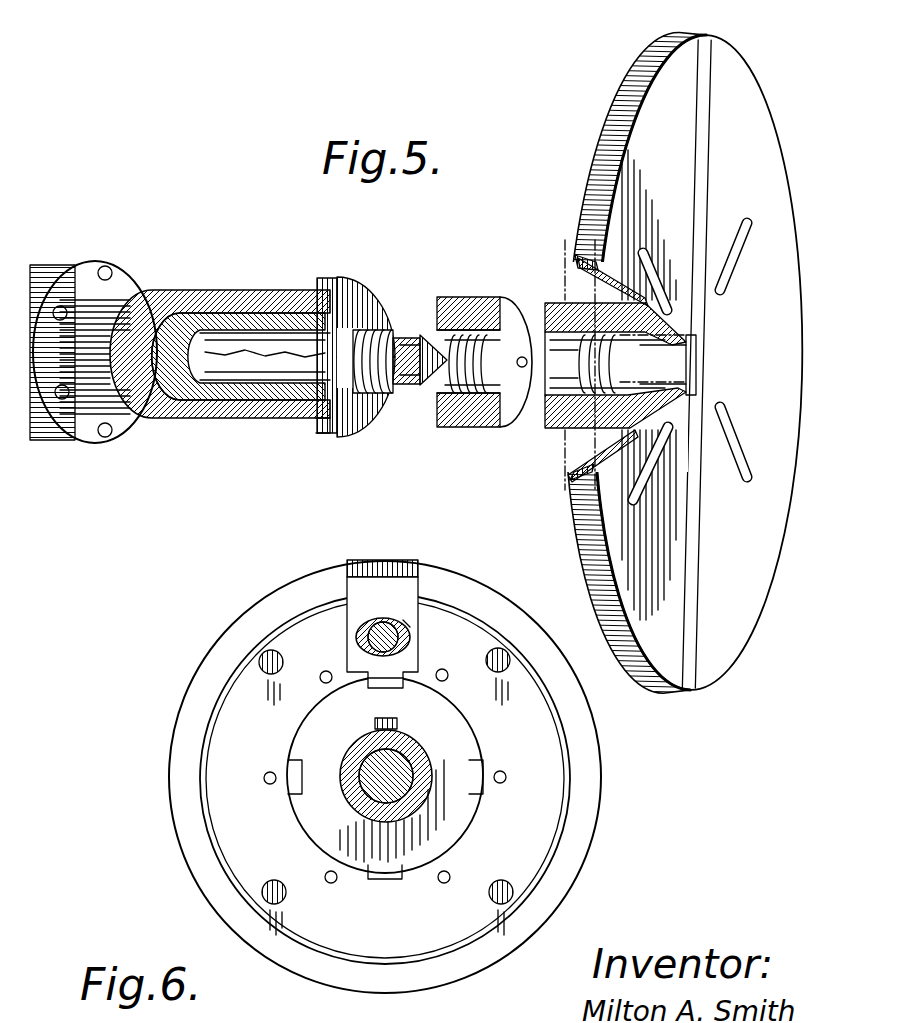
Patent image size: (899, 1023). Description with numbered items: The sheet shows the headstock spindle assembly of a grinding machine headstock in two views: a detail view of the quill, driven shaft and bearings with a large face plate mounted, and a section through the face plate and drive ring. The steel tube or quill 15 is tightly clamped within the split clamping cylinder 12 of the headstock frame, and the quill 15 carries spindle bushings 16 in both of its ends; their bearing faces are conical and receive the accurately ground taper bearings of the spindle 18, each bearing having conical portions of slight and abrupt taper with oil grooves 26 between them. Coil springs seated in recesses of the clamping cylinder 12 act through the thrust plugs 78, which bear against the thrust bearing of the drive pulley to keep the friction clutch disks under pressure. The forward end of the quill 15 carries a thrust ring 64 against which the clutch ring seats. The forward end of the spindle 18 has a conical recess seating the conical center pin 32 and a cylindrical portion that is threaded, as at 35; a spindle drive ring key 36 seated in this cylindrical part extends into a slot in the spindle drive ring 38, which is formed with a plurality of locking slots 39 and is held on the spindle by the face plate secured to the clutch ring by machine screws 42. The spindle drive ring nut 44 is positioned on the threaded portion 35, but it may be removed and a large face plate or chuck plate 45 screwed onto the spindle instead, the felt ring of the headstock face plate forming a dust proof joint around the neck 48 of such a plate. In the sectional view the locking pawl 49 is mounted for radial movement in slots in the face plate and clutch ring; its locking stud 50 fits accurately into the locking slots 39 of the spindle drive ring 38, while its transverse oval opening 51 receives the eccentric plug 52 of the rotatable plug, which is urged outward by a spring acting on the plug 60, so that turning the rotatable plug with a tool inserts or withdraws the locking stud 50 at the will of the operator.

In FIG. 5, the split clamping cylinder 12 is at (57, 268).
In FIG. 5, the thrust plugs 78 is at (108, 272).
In FIG. 5, the quill 15 is at (183, 300).
In FIG. 5, the spindle bushings 16 is at (237, 315).
In FIG. 5, the spindle 18 is at (250, 380).
In FIG. 5, the oil grooves 26 is at (313, 292).
In FIG. 5, the threaded portion 35 is at (378, 458).
In FIG. 5, the spindle drive ring key 36 is at (350, 330).
In FIG. 6, the spindle drive ring key 36 is at (375, 727).
In FIG. 5, the conical center pin 32 is at (407, 347).
In FIG. 6, the conical center pin 32 is at (370, 790).
In FIG. 5, the spindle drive ring nut 44 is at (467, 420).
In FIG. 5, the neck 48 is at (563, 300).
In FIG. 5, the face plates or chuck plates 45 is at (632, 127).
In FIG. 5, the thrust ring 64 is at (315, 428).
In FIG. 6, the machine screws 42 is at (495, 898).
In FIG. 6, the locking slots 39 is at (480, 784).
In FIG. 6, the spindle drive ring 38 is at (448, 741).
In FIG. 6, the locking pawl 49 is at (385, 592).
In FIG. 6, the locking stud 50 is at (380, 683).
In FIG. 6, the eccentric plug 52 is at (410, 640).
In FIG. 6, the plug 60 is at (365, 636).
In FIG. 6, the transverse oval opening 51 is at (410, 620).